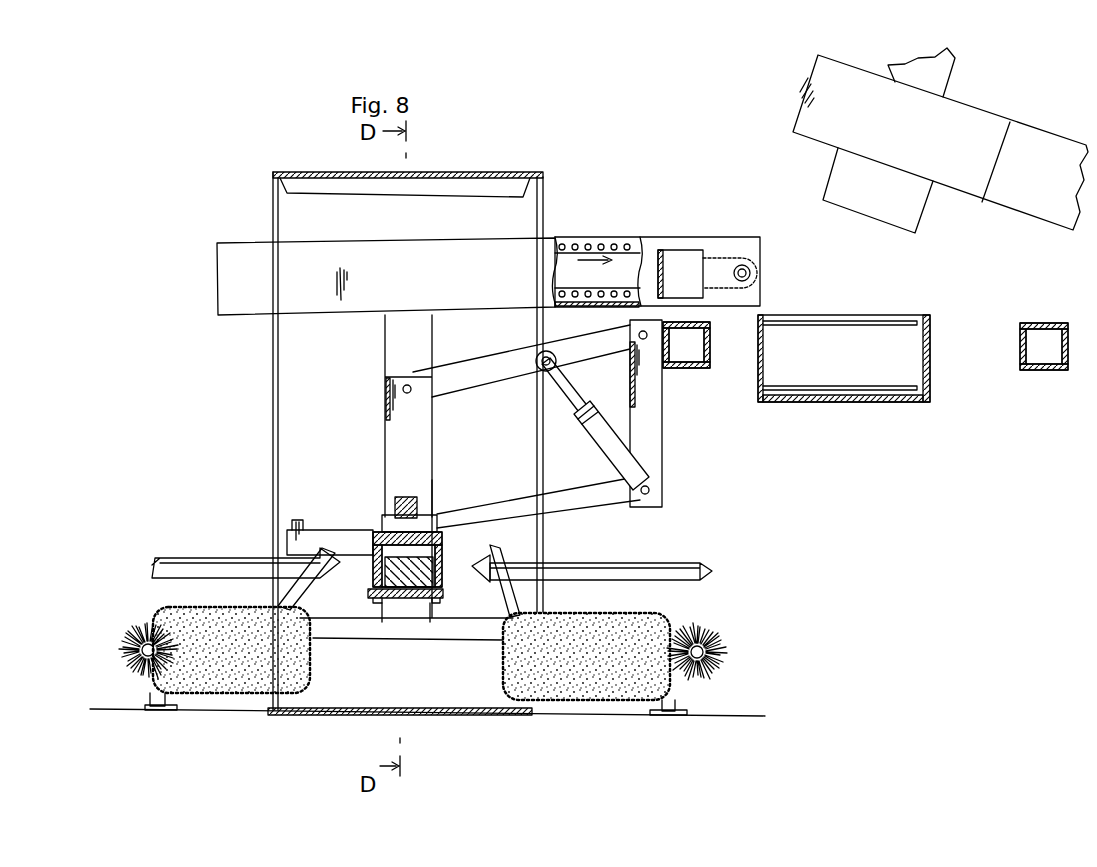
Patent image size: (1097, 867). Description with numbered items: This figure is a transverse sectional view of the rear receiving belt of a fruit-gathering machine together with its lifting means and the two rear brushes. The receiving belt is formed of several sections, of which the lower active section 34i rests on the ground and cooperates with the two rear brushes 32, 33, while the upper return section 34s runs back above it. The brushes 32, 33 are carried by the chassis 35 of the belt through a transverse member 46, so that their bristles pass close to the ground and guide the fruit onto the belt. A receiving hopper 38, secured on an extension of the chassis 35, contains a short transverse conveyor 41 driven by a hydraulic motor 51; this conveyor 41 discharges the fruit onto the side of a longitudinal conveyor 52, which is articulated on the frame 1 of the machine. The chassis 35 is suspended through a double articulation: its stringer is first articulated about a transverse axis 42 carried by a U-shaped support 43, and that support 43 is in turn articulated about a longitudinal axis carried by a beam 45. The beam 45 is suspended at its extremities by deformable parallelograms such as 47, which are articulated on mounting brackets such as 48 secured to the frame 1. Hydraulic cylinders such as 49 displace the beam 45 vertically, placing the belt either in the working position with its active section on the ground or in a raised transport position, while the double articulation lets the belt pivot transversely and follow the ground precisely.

The frame 1 is at (672, 368).
The rear brush 32 is at (155, 610).
The rear brush 33 is at (703, 628).
The upper return section 34s is at (502, 176).
The lower active section 34i is at (476, 714).
The chassis 35 is at (412, 592).
The receiving hopper 38 is at (405, 262).
The transverse conveyor 41 is at (600, 249).
The transverse axis 42 is at (426, 598).
The U-shaped support 43 is at (373, 553).
The beam 45 is at (403, 495).
The transverse member 46 is at (312, 527).
The deformable parallelogram 47 is at (498, 378).
The mounting bracket 48 is at (655, 415).
The hydraulic cylinder 49 is at (618, 429).
The hydraulic motor 51 is at (685, 266).
The longitudinal conveyor 52 is at (853, 392).